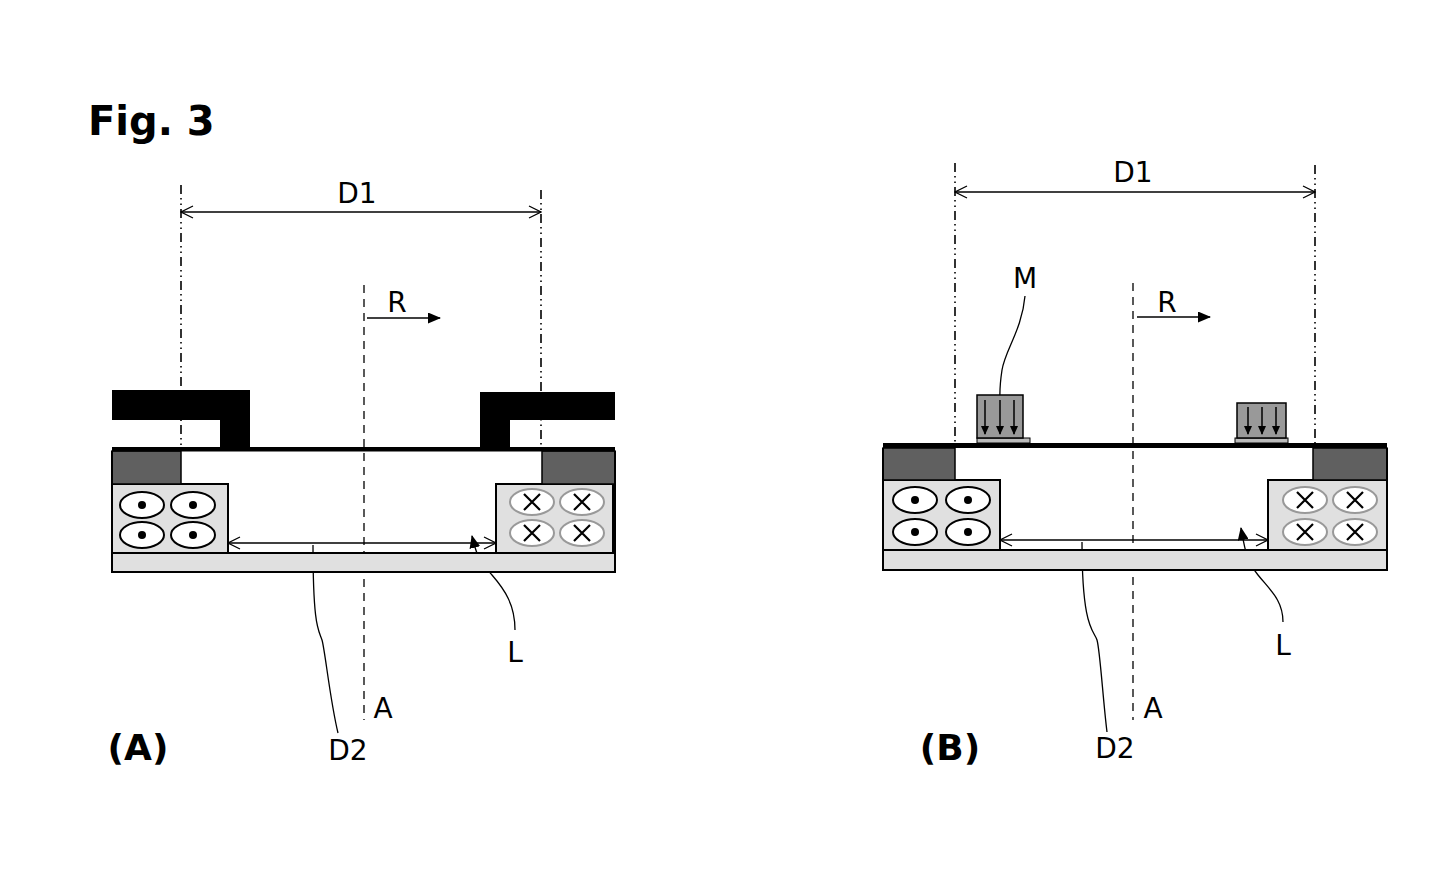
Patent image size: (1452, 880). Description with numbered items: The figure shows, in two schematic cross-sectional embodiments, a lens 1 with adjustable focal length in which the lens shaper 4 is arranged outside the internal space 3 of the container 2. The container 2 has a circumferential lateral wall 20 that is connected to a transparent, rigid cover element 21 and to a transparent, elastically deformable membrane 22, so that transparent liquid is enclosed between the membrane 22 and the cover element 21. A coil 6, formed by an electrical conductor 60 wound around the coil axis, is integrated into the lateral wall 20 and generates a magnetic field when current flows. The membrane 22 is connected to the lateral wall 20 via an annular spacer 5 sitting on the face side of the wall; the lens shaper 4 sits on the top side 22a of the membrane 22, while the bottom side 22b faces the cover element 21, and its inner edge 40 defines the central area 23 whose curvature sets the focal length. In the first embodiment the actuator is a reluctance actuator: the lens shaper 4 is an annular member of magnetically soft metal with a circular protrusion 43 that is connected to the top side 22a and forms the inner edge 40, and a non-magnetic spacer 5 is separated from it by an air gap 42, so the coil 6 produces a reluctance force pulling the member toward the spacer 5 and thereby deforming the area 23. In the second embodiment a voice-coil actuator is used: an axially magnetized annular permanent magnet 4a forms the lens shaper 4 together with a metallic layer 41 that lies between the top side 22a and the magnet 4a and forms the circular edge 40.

The lens 1 is at (553, 280).
The container 2 is at (622, 486).
The internal space 3 is at (329, 522).
The lens shaper 4 is at (700, 468).
The annular permanent magnet 4a is at (980, 393).
The annular spacer 5 is at (104, 458).
The coil 6 is at (563, 536).
The circumferential lateral wall 20 is at (622, 512).
The transparent cover element 21 is at (413, 574).
The membrane 22 is at (409, 445).
The top side of the membrane 22a is at (170, 466).
The bottom side of the membrane 22b is at (757, 497).
The central area of the membrane 23 is at (348, 445).
The inner circumferential edge 40 is at (254, 445).
The layer 41 is at (1230, 432).
The air gap 42 is at (592, 436).
The circular protrusion 43 is at (243, 452).
The electrical conductor 60 is at (142, 535).